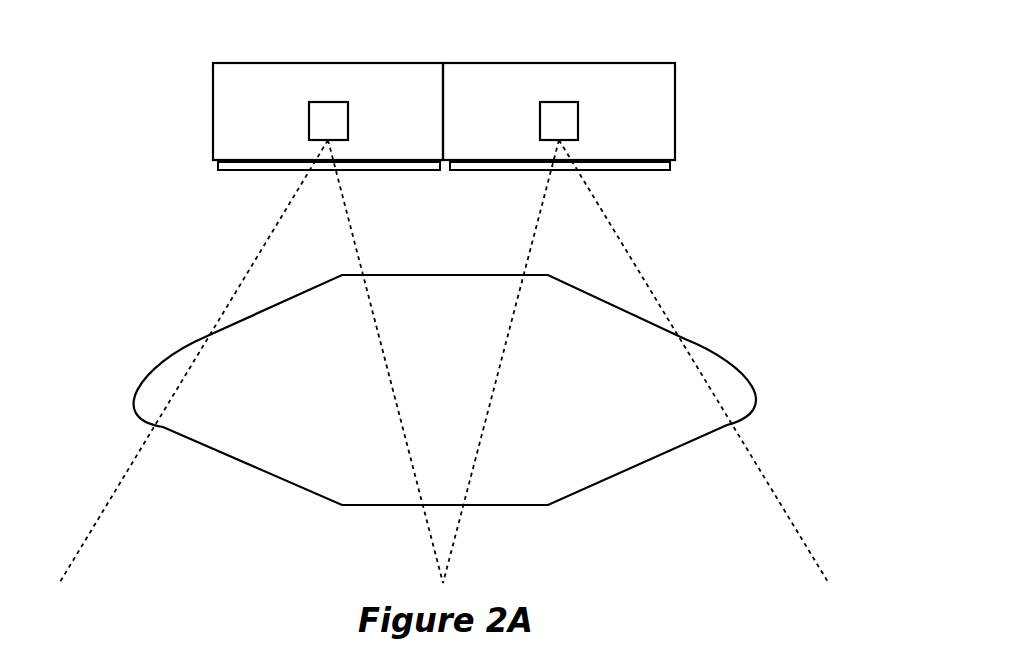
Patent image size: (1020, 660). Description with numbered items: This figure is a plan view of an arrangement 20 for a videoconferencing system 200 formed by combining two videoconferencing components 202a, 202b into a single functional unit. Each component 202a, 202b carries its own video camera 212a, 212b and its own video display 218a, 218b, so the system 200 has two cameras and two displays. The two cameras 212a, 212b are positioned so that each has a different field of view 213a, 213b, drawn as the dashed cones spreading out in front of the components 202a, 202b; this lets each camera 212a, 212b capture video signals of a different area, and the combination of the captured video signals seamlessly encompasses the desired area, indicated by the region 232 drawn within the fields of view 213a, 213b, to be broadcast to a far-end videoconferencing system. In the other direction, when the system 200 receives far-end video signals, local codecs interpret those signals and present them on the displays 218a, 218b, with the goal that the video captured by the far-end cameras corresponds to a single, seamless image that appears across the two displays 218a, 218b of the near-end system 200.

The illumination system 20 is at (830, 122).
The videoconferencing system 200 is at (193, 65).
The videoconferencing component 202a is at (300, 63).
The videoconferencing component 202b is at (532, 63).
The video camera 212a is at (348, 118).
The video camera 212b is at (578, 118).
The video display 218a is at (406, 170).
The video display 218b is at (637, 170).
The field of view 213a is at (253, 263).
The field of view 213b is at (667, 315).
The illuminated region / lens 232 is at (445, 390).